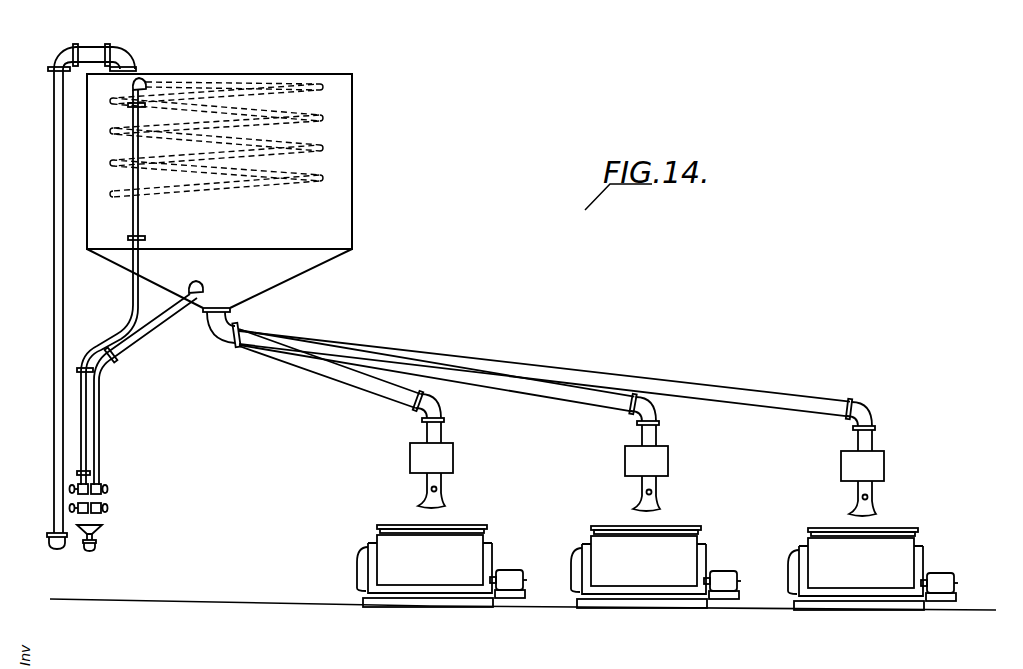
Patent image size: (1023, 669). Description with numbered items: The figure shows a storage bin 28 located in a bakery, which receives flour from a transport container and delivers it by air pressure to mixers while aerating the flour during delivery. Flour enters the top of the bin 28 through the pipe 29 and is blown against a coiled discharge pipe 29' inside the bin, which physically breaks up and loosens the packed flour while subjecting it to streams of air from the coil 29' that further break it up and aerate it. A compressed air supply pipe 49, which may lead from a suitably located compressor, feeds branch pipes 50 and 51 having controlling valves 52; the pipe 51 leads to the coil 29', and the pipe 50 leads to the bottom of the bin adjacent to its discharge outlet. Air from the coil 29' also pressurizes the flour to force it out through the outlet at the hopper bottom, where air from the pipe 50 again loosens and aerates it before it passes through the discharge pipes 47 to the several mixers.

The storage bin 28 is at (338, 157).
The pipe 29 is at (69, 296).
The coiled discharge pipe 29' is at (216, 120).
The discharge pipes 47 is at (580, 378).
The compressed air supply pipe 49 is at (95, 550).
The branch pipe 50 is at (100, 430).
The branch pipe 51 is at (92, 407).
The controlling valves 52 is at (100, 501).